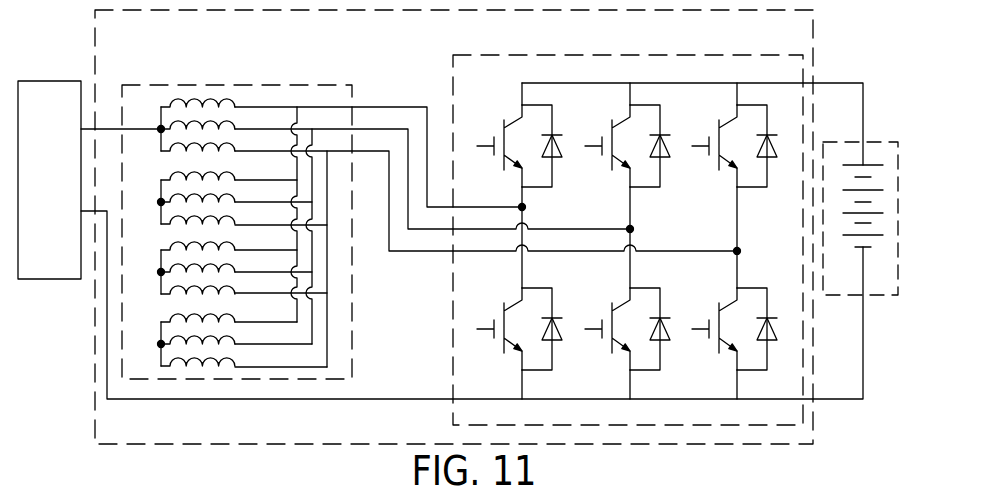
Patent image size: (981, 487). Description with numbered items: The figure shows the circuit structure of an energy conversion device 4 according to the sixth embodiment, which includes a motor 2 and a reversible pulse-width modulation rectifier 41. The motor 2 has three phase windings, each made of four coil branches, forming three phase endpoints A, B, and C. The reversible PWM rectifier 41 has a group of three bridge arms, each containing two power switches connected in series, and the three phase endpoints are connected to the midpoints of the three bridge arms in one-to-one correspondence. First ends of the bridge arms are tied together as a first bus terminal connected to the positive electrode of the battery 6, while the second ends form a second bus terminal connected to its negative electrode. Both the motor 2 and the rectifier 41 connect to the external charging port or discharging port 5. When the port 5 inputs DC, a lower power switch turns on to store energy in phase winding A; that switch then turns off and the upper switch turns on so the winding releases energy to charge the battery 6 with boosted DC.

The motor 2 is at (240, 85).
The energy conversion device 4 is at (813, 46).
The reversible pulse-width modulation rectifier 41 is at (641, 55).
The charging port or discharging port 5 is at (45, 80).
The battery 6 is at (868, 142).